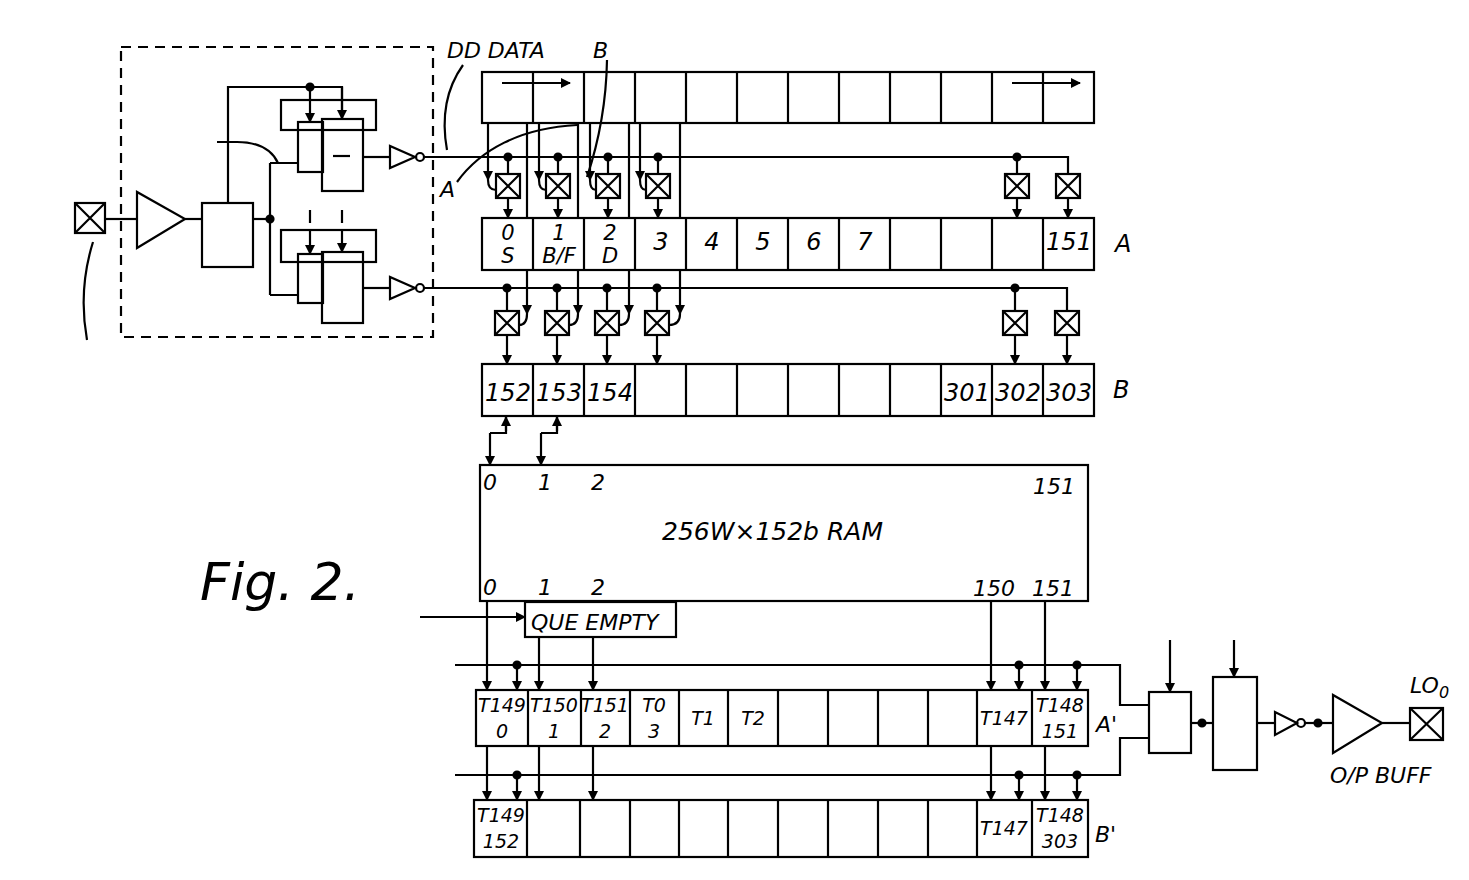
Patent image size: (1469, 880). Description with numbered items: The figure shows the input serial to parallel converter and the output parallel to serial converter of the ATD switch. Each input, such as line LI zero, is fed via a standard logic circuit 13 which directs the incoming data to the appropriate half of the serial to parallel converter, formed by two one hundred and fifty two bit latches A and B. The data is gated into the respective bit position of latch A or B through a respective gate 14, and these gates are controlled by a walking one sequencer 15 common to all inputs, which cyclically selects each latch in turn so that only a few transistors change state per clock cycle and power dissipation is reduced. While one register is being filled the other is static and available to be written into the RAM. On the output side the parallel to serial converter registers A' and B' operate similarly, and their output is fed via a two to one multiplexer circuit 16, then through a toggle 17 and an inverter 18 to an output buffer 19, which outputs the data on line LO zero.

The standard logic circuit 13 is at (393, 338).
The gate 14 is at (672, 347).
The walking one sequencer 15 is at (1045, 72).
The 2 to 1 multiplexer circuit 16 is at (1175, 753).
The toggle 17 is at (1238, 770).
The inverter 18 is at (1287, 733).
The output buffer 19 is at (1352, 697).